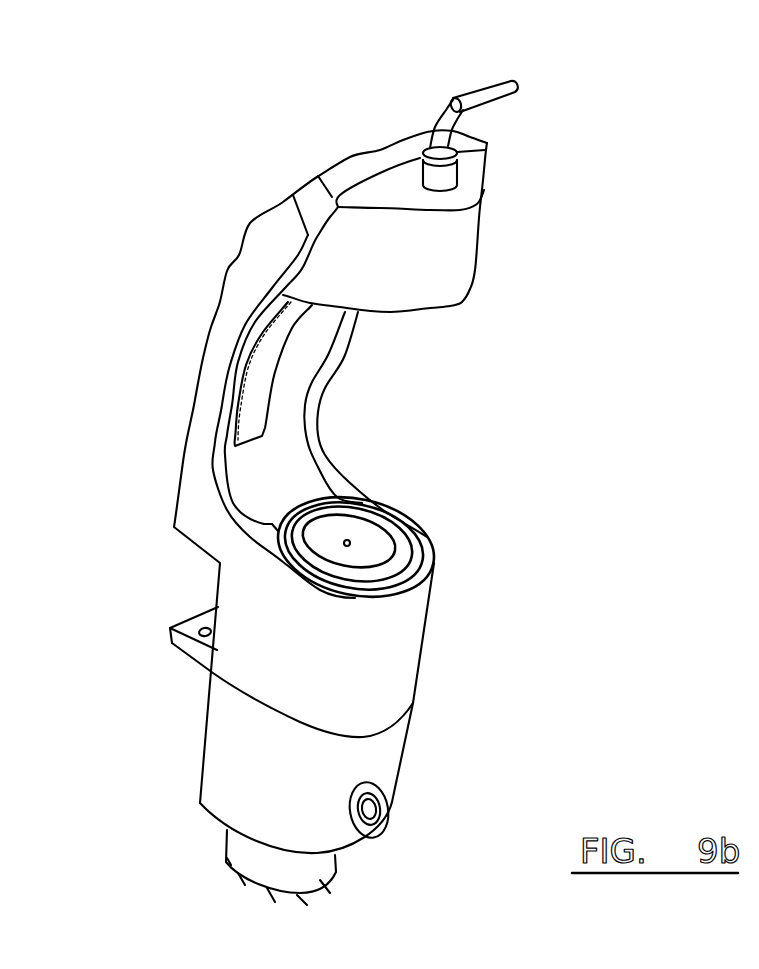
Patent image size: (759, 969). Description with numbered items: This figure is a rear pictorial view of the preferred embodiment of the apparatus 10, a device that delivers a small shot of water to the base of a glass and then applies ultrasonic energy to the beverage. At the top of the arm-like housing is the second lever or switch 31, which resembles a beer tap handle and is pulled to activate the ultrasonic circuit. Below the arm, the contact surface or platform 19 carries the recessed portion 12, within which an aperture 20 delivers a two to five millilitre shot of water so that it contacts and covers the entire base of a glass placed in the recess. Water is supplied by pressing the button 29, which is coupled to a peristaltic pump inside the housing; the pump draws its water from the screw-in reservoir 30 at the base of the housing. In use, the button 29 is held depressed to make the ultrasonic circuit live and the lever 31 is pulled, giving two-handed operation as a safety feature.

The apparatus 10 is at (231, 251).
The second lever or switch 31 is at (461, 84).
The contact surface (platform) 19 is at (398, 545).
The recessed portion 12 is at (372, 538).
The aperture 20 is at (350, 541).
The button 29 is at (398, 812).
The screw-in reservoir 30 is at (315, 872).